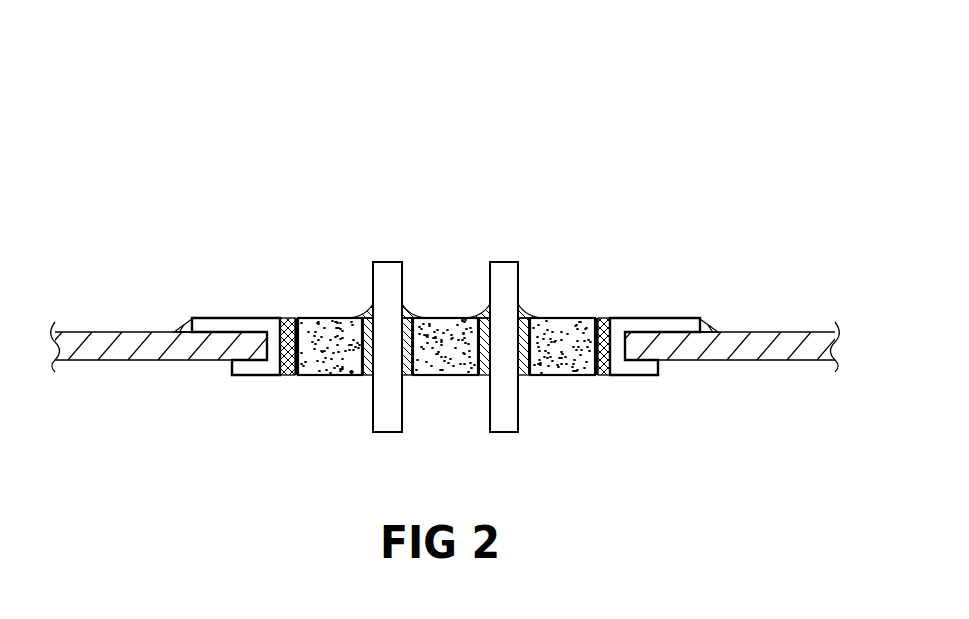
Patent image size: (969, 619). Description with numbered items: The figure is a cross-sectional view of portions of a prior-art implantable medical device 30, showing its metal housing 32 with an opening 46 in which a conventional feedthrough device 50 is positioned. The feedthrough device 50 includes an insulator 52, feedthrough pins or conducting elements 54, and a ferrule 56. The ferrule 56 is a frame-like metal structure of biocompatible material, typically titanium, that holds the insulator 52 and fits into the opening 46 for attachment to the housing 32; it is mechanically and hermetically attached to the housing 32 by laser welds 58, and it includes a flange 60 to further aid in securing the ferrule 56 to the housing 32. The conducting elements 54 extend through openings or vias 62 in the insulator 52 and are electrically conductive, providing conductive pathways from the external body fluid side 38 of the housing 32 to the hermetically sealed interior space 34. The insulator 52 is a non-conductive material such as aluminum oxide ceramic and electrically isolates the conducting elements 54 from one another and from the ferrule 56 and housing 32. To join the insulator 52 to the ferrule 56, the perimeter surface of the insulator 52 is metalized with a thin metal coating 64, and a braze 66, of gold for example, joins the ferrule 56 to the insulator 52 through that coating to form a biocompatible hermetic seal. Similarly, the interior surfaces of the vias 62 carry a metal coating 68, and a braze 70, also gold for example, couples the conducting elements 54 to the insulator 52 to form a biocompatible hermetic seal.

The medical device 30 is at (733, 69).
The metal housing 32 is at (797, 332).
The interior space 34 is at (148, 476).
The body fluid side 38 is at (195, 212).
The opening 46 is at (573, 475).
The feedthrough device 50 is at (593, 188).
The insulator 52 is at (557, 318).
The conducting elements 54 is at (392, 262).
The ferrule 56 is at (650, 310).
The laser welds 58 is at (185, 326).
The flange 60 is at (677, 318).
The vias 62 is at (365, 376).
The metal coating 64 is at (297, 318).
The braze 66 is at (284, 318).
The metal coating 68 is at (478, 377).
The braze 70 is at (361, 311).